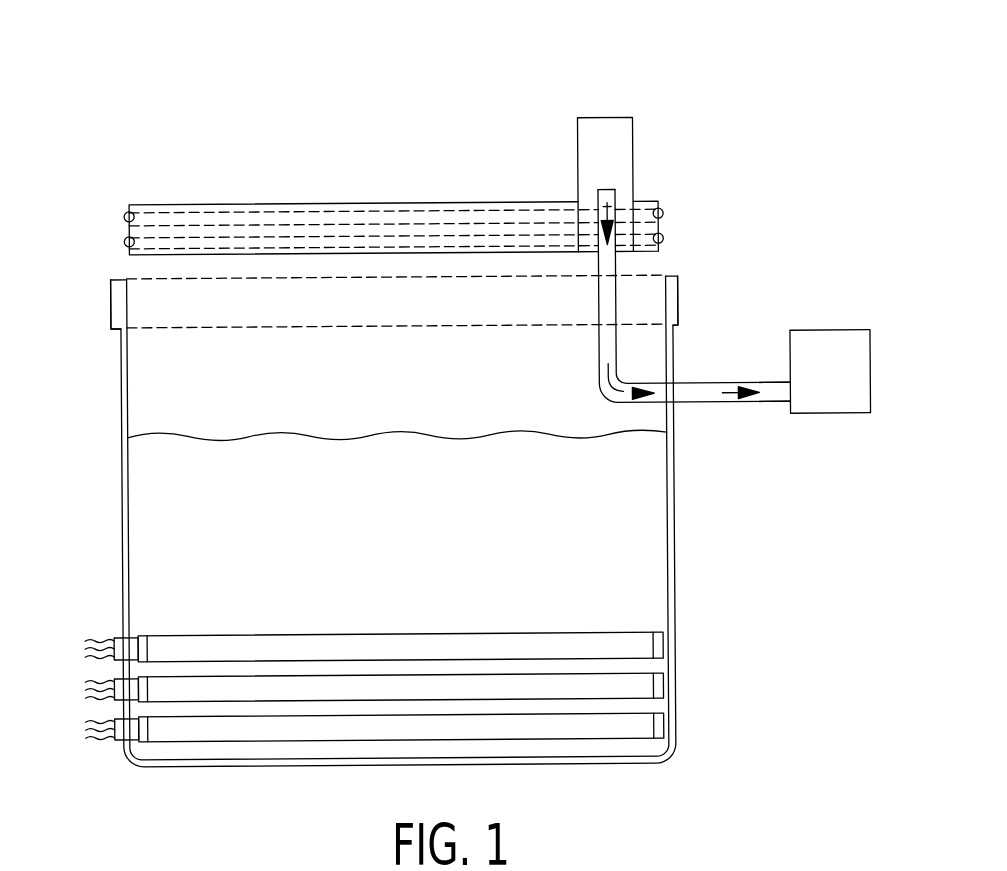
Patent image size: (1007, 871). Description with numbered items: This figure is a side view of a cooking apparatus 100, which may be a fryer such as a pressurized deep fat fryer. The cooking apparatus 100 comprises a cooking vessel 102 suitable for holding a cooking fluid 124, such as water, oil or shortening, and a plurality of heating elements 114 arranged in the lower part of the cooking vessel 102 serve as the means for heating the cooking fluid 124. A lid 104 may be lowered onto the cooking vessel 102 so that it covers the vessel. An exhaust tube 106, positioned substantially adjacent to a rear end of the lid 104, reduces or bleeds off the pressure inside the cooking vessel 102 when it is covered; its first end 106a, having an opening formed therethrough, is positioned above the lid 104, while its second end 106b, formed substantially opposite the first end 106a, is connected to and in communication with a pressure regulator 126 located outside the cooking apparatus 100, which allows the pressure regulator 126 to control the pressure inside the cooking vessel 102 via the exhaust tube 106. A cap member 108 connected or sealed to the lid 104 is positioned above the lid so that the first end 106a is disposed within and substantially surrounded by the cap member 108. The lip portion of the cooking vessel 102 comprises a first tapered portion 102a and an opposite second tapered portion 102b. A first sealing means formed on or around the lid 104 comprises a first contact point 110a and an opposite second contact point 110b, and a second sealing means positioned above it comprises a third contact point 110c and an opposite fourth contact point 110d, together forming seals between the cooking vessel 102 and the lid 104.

The cooking apparatus 100 is at (172, 73).
The cooking vessel 102 is at (122, 500).
The first tapered portion 102a is at (111, 300).
The second tapered portion 102b is at (679, 284).
The lid 104 is at (350, 220).
The exhaust tube 106 is at (599, 293).
The first end 106a is at (609, 190).
The second end 106b is at (783, 383).
The cap member 108 is at (634, 138).
The first contact point 110a is at (124, 243).
The second contact point 110b is at (664, 238).
The third contact point 110c is at (124, 217).
The fourth contact point 110d is at (664, 214).
The heating elements 114 is at (297, 635).
The cooking fluid 124 is at (310, 460).
The pressure regulator 126 is at (828, 415).